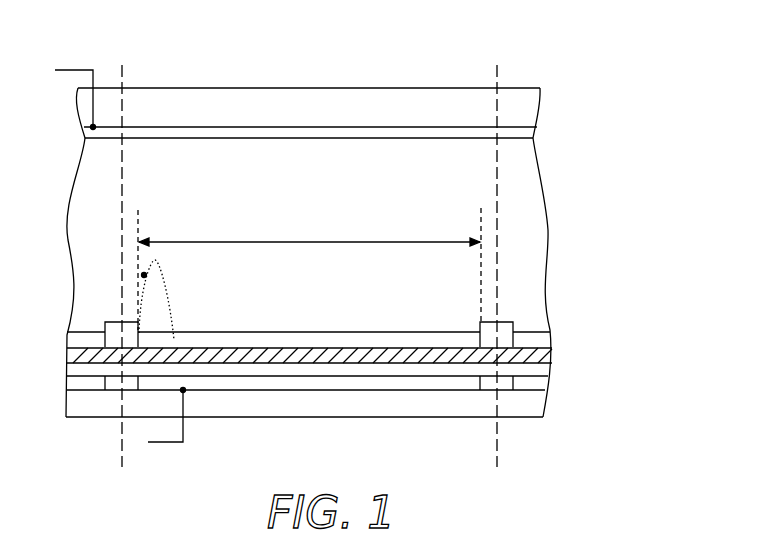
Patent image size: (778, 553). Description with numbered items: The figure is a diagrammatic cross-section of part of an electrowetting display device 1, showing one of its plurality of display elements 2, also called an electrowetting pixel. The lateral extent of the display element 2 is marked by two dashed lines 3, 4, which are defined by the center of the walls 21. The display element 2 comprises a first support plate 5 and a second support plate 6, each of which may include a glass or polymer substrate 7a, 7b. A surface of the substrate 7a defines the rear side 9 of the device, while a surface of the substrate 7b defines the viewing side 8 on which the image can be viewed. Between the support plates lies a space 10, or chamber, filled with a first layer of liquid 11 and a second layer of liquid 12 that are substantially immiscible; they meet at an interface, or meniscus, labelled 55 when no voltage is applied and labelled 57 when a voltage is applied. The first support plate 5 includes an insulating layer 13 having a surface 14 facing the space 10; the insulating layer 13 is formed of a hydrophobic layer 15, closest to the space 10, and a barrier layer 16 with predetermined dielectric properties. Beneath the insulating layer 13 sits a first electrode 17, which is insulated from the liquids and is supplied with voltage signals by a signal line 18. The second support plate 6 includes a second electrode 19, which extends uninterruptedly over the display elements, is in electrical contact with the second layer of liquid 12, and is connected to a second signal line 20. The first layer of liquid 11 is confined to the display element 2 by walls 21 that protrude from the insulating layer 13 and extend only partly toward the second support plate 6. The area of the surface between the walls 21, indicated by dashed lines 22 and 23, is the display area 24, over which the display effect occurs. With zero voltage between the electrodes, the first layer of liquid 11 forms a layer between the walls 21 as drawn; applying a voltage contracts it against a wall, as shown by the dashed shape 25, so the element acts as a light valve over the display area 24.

The electrowetting display device 1 is at (610, 59).
The display element 2 is at (307, 48).
The dashed line 3 is at (123, 72).
The dashed line 4 is at (498, 72).
The first support plate 5 is at (597, 332).
The second support plate 6 is at (555, 88).
The substrate 7a is at (523, 406).
The substrate 7b is at (440, 110).
The viewing side 8 is at (212, 88).
The rear side 9 is at (270, 417).
The space 10 is at (375, 153).
The first layer of liquid 11 is at (447, 339).
The second layer of liquid 12 is at (541, 215).
The insulating layer 13 is at (555, 348).
The surface 14 is at (352, 348).
The layer 15 is at (305, 355).
The barrier layer 16 is at (262, 370).
The first electrode 17 is at (375, 385).
The signal line 18 is at (167, 443).
The second electrode 19 is at (110, 133).
The second signal line 20 is at (70, 70).
The walls 21 is at (112, 333).
The dashed line 22 is at (479, 213).
The dashed line 23 is at (141, 213).
The display area 24 is at (309, 231).
The dashed shape 25 is at (144, 275).
The interface 55 is at (398, 328).
The interface 57 is at (172, 297).